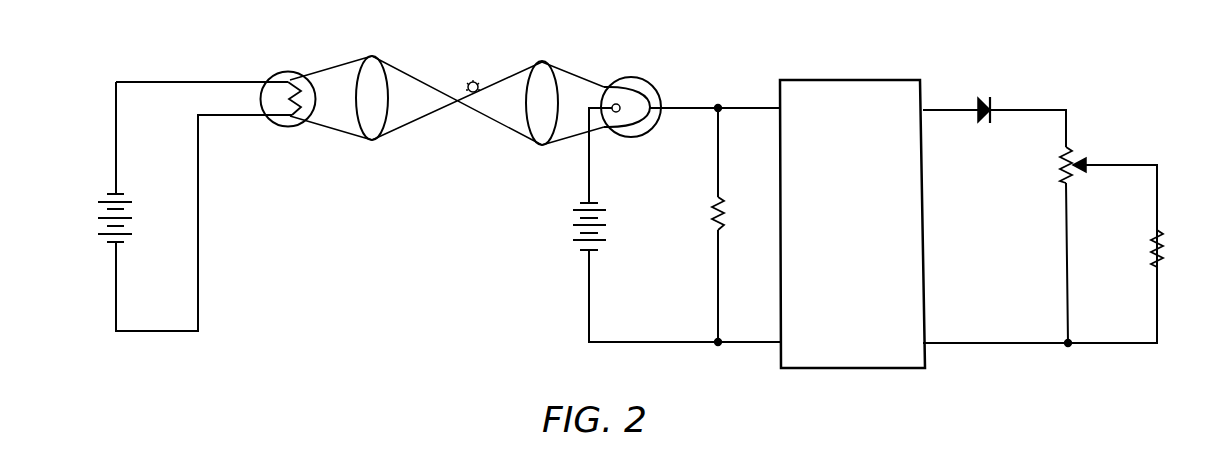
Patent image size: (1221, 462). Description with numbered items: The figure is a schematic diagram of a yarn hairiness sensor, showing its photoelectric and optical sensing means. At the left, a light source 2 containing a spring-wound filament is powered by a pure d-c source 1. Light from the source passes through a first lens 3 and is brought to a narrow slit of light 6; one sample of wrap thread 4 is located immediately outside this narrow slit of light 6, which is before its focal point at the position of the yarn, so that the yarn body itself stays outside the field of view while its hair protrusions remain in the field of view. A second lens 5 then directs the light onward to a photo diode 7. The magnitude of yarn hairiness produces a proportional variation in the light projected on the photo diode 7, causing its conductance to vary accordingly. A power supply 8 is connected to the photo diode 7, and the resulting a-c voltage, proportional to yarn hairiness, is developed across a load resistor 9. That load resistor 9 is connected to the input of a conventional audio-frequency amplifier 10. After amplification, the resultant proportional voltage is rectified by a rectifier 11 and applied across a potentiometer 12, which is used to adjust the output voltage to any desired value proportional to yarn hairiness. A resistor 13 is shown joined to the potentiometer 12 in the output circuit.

The pure d-c source 1 is at (98, 222).
The light source 2 is at (288, 127).
The condensing lens 3 is at (368, 56).
The sample of wrap thread 4 is at (470, 81).
The second lens 5 is at (541, 62).
The narrow slit of light 6 is at (478, 95).
The photo diode 7 is at (649, 86).
The power supply 8 is at (575, 224).
The load resistor 9 is at (713, 216).
The audio-frequency amplifier 10 is at (862, 80).
The rectifier 11 is at (993, 96).
The potentiometer 12 is at (1060, 172).
The resistor 13 is at (1163, 248).